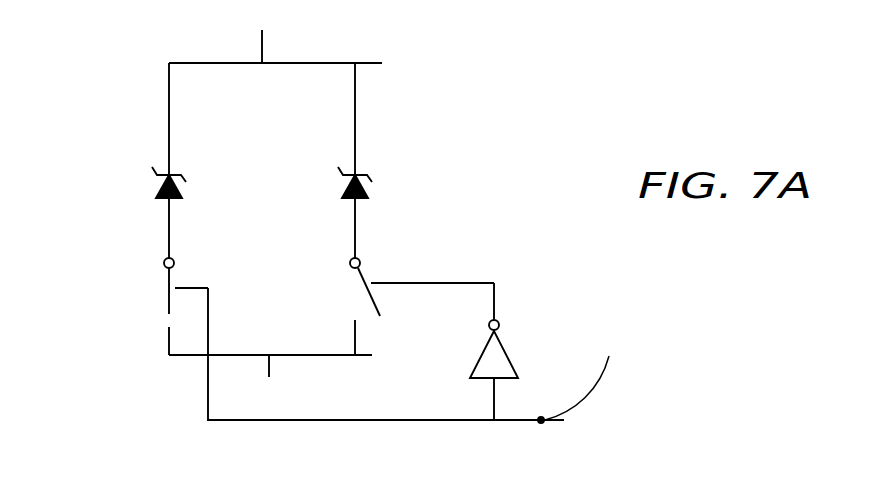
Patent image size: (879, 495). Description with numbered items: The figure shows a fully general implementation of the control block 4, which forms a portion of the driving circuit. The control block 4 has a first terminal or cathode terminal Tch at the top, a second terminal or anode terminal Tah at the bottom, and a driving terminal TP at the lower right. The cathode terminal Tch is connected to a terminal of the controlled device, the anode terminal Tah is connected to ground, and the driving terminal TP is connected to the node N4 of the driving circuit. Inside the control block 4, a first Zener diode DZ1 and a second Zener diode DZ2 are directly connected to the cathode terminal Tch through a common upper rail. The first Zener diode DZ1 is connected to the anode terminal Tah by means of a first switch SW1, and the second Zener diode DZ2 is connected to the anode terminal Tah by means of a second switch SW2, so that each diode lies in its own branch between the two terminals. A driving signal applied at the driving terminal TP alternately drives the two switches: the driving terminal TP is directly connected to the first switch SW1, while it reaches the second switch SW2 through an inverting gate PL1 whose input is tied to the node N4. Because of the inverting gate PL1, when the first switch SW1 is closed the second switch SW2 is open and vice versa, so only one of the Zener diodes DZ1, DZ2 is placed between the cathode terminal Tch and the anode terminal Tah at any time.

The control block 4 is at (126, 96).
The cathode terminal Tch is at (263, 31).
The anode terminal Tah is at (269, 384).
The first Zener diode DZ1 is at (192, 184).
The second Zener diode DZ2 is at (382, 184).
The first switch SW1 is at (156, 306).
The second switch SW2 is at (394, 287).
The inverting gate PL1 is at (505, 351).
The node of the driving circuit N4 is at (569, 431).
The driving terminal TP is at (585, 374).